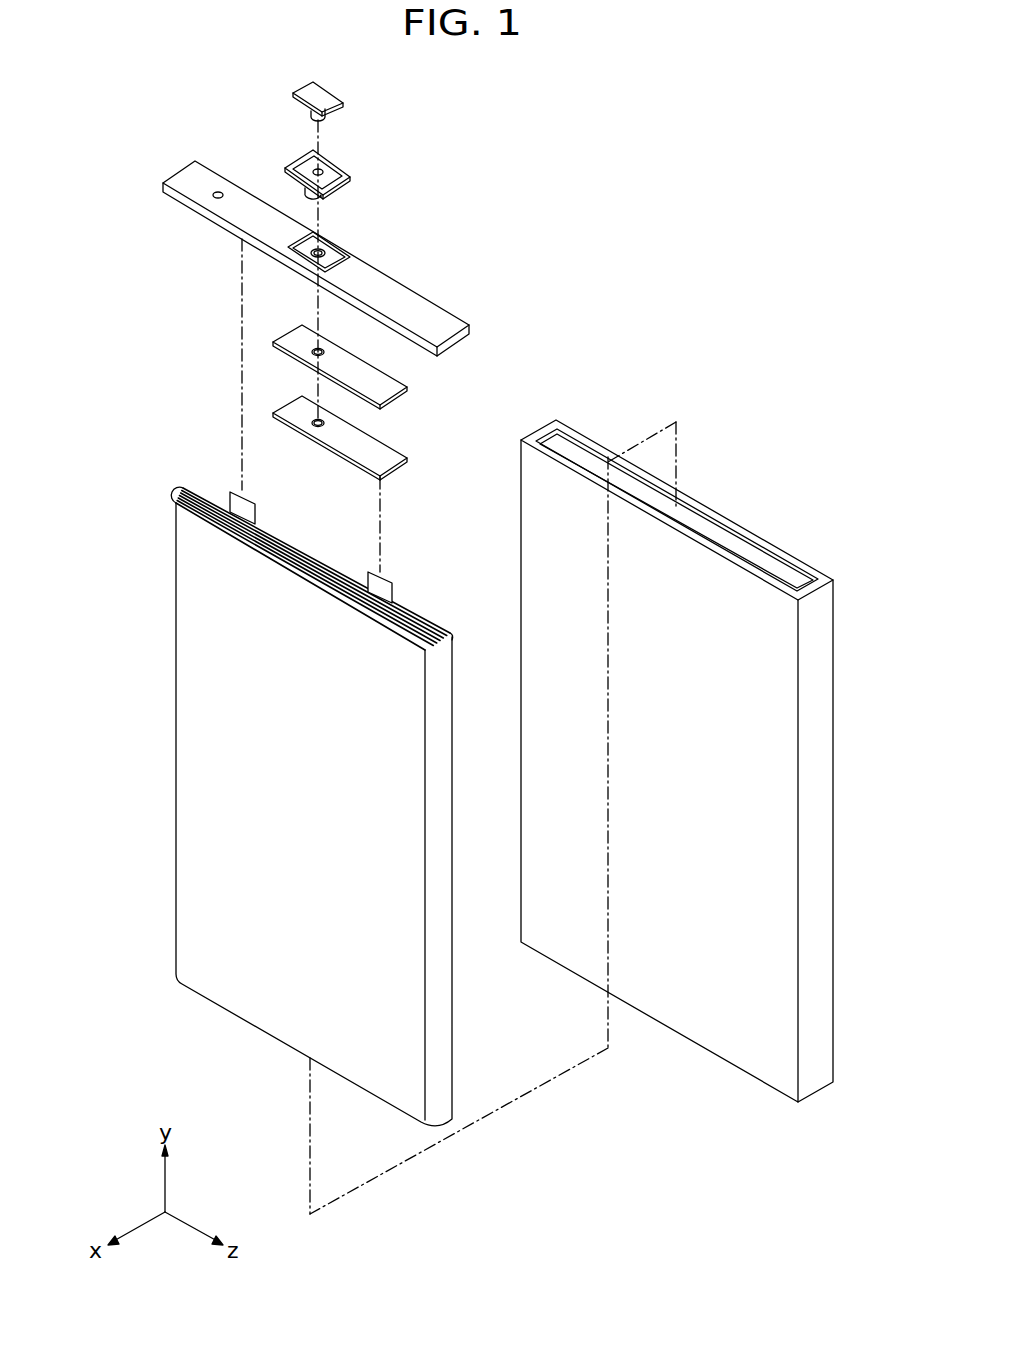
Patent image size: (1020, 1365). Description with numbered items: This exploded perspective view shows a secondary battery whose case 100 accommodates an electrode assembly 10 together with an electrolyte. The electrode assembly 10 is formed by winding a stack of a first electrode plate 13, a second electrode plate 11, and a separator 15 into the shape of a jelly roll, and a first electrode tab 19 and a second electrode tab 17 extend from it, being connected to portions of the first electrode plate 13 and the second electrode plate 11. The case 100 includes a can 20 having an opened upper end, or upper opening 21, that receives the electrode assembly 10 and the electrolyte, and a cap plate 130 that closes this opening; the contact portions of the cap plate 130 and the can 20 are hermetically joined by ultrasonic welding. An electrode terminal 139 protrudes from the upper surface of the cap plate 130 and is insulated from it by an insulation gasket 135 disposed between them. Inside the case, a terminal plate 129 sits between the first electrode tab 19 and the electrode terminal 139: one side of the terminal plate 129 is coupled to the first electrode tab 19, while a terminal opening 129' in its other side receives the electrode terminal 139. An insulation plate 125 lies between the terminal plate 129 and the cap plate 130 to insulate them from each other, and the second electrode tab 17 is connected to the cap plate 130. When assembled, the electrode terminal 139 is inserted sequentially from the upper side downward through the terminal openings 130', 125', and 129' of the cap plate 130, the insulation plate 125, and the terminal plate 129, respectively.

The case 100 is at (798, 1113).
The electrode assembly 10 is at (250, 785).
The second electrode plate 11 is at (177, 503).
The first electrode plate 13 is at (183, 495).
The separator 15 is at (178, 498).
The second electrode tab 17 is at (253, 512).
The first electrode tab 19 is at (390, 592).
The can 20 is at (790, 552).
The opening of case 21 is at (717, 528).
The insulation plate 125 is at (374, 386).
The terminal opening of insulation plate 125' is at (285, 376).
The terminal plate 129 is at (368, 455).
The terminal opening of terminal plate 129' is at (285, 448).
The cap plate 130 is at (338, 258).
The terminal opening of cap plate 130' is at (349, 238).
The insulation gasket 135 is at (345, 167).
The electrode terminal 139 is at (332, 100).